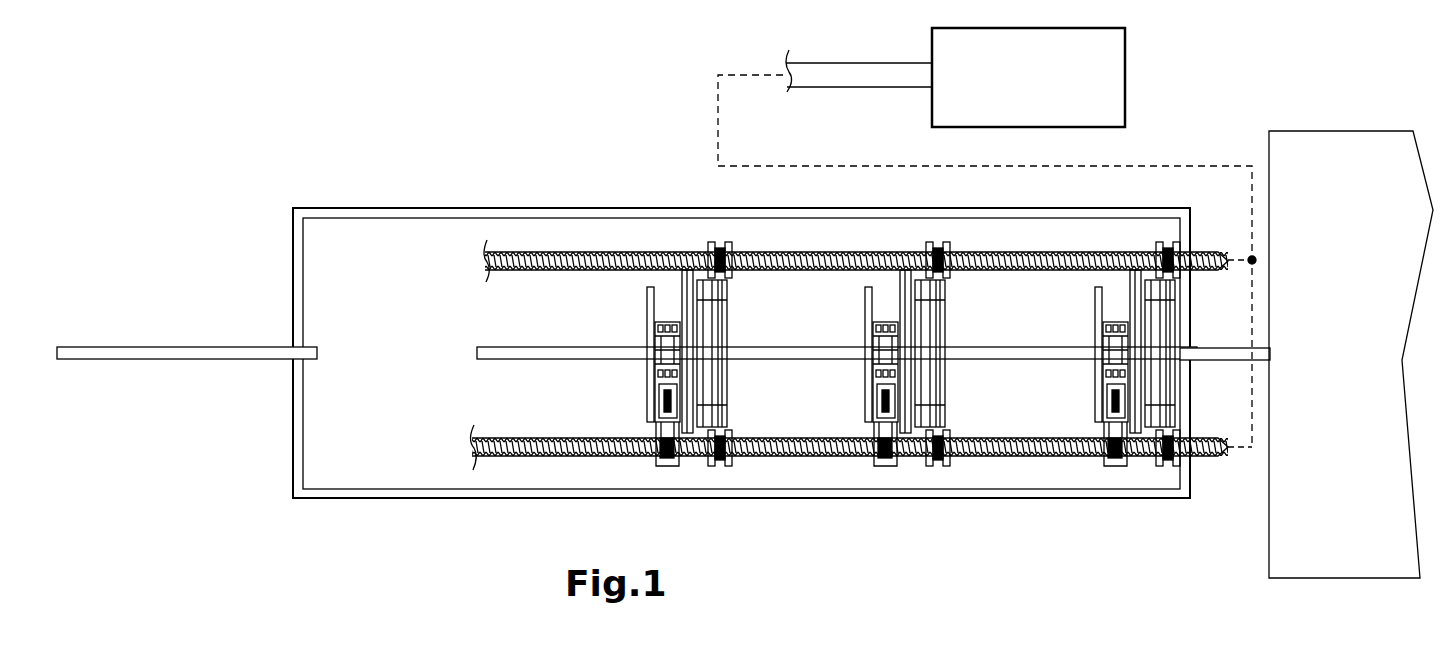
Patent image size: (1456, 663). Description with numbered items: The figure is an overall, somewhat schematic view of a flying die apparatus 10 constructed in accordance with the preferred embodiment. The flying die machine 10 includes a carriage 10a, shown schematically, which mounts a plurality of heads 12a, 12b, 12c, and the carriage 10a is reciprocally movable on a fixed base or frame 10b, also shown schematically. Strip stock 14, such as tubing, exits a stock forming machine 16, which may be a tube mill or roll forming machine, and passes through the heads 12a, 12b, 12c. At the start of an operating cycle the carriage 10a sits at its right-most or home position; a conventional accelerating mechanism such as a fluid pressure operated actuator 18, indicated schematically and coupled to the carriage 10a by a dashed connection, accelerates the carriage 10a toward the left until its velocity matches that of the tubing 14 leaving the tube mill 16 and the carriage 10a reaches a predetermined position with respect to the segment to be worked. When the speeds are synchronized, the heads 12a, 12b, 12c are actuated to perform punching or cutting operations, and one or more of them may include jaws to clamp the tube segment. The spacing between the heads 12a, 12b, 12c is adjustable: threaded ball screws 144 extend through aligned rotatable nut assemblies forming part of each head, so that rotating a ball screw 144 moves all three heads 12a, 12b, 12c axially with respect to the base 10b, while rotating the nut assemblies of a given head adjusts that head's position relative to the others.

The flying die apparatus 10 is at (741, 289).
The carriage 10a is at (795, 250).
The fixed base or frame 10b is at (605, 208).
The head 12a is at (742, 335).
The head 12b is at (957, 335).
The head 12c is at (1085, 390).
The strip stock 14 is at (1218, 350).
The threaded ball screw 144 is at (1052, 252).
The stock forming machine 16 is at (1330, 131).
The fluid pressure operated actuator 18 is at (1040, 93).